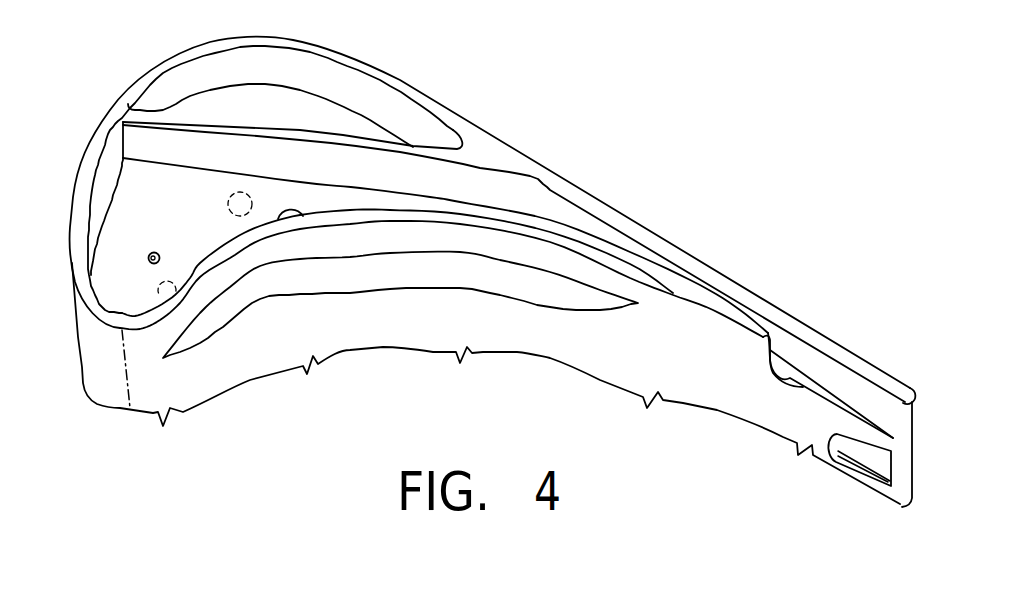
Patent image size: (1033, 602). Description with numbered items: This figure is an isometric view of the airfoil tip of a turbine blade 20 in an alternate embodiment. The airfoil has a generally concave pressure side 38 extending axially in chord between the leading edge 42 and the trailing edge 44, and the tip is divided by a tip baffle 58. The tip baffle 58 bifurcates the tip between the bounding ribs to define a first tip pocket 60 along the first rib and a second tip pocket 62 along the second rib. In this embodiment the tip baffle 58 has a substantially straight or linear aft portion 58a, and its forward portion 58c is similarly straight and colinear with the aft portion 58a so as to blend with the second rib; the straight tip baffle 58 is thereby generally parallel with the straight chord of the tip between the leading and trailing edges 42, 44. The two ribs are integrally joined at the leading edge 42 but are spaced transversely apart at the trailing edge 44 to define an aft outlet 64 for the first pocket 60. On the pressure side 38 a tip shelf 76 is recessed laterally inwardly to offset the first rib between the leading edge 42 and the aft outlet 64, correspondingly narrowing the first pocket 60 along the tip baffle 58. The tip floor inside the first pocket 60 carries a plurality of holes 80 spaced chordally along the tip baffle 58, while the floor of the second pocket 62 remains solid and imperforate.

The turbine blade 20 is at (578, 170).
The tip baffle 58 is at (161, 98).
The aft portion 58a is at (343, 135).
The forward portion 58c is at (185, 114).
The second tip pocket 62 is at (284, 118).
The first tip pocket 60 is at (157, 197).
The holes 80 is at (154, 252).
The tip shelf 76 is at (421, 283).
The pressure side 38 is at (513, 335).
The leading edge 42 is at (127, 377).
The aft outlet 64 is at (801, 368).
The trailing edge 44 is at (913, 482).